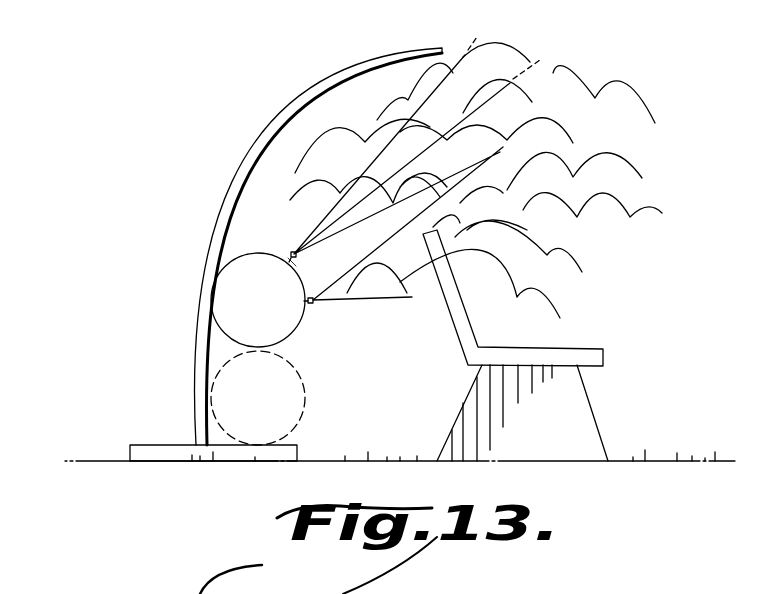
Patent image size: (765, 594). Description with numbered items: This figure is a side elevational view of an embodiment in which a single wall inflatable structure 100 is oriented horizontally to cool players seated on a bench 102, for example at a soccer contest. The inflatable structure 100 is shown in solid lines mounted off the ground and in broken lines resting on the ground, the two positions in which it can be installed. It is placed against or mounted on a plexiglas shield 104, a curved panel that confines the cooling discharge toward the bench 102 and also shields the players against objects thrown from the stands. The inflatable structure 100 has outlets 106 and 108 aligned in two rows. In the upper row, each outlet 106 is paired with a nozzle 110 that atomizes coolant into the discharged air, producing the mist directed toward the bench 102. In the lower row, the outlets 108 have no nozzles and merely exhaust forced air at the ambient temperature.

The single wall inflatable structure 100 is at (299, 324).
The bench 102 is at (600, 366).
The plexiglas shield 104 is at (304, 95).
The outlet 106 is at (289, 261).
The outlet 108 is at (307, 303).
The nozzle 110 is at (292, 254).